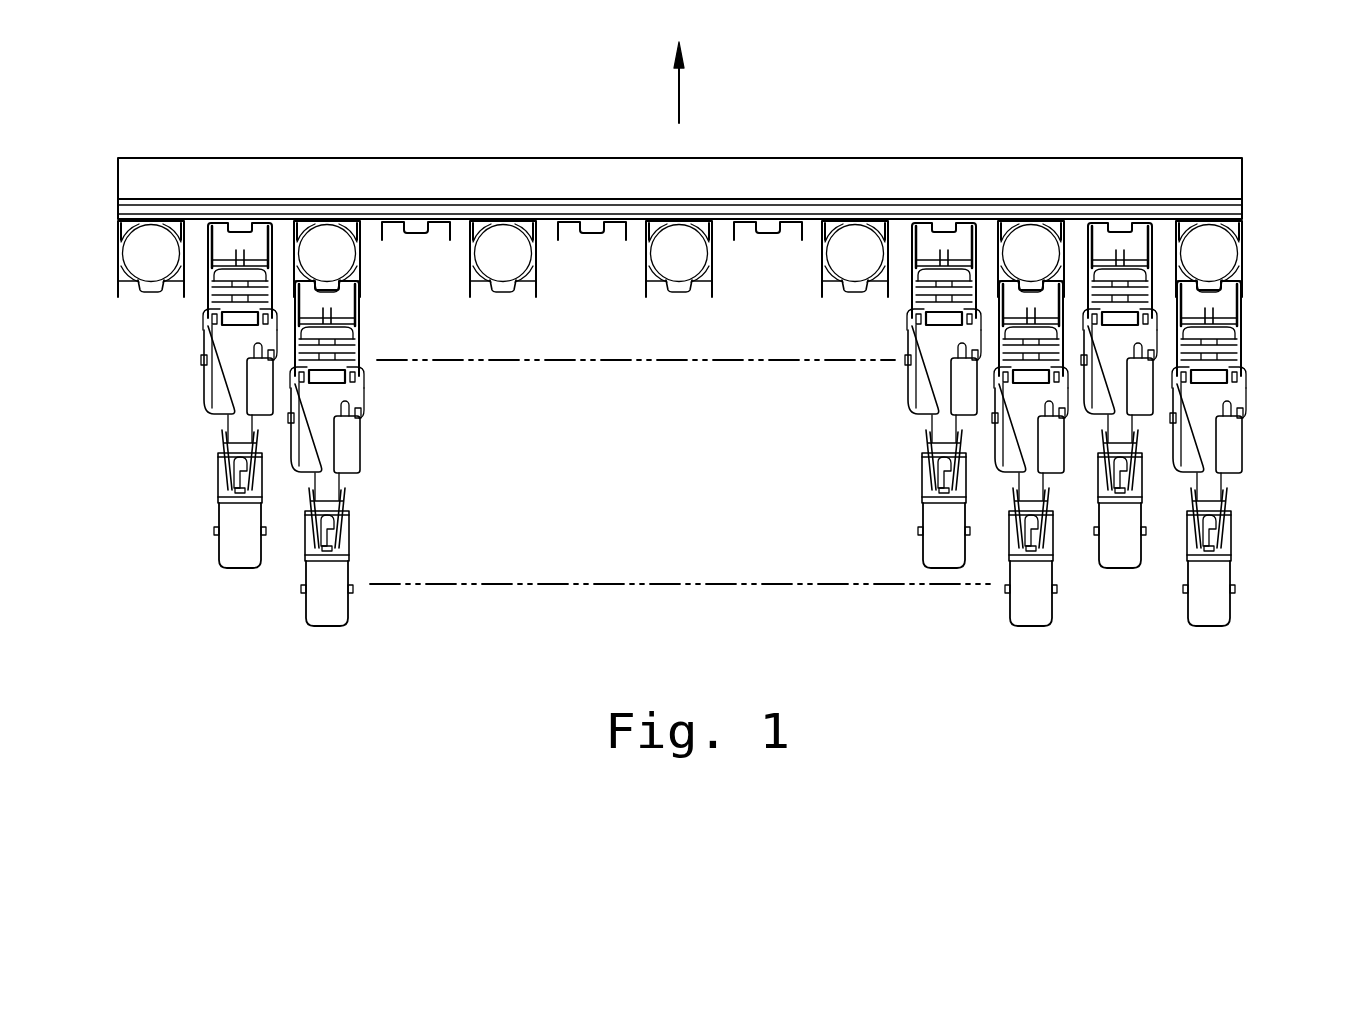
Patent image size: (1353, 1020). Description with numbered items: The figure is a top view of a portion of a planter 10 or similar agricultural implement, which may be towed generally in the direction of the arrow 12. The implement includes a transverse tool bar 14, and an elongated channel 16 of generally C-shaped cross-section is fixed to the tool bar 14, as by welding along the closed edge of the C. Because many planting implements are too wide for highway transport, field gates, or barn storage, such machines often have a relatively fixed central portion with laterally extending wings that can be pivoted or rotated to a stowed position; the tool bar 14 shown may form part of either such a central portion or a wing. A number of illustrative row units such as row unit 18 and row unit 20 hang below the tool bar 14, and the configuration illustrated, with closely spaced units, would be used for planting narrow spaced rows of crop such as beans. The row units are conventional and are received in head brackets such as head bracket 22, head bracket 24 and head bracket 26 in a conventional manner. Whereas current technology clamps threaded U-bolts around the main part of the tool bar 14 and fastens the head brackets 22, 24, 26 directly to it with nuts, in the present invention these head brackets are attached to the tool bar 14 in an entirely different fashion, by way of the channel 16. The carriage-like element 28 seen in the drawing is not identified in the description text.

The planter 10 is at (877, 90).
The arrow 12 is at (679, 95).
The tool bar 14 is at (1127, 170).
The elongated channel 16 is at (1236, 208).
The row unit 18 is at (207, 375).
The row unit 20 is at (1241, 446).
The head bracket 22 is at (118, 262).
The head bracket 24 is at (505, 293).
The head bracket 26 is at (416, 237).
The carriage 28 is at (206, 234).